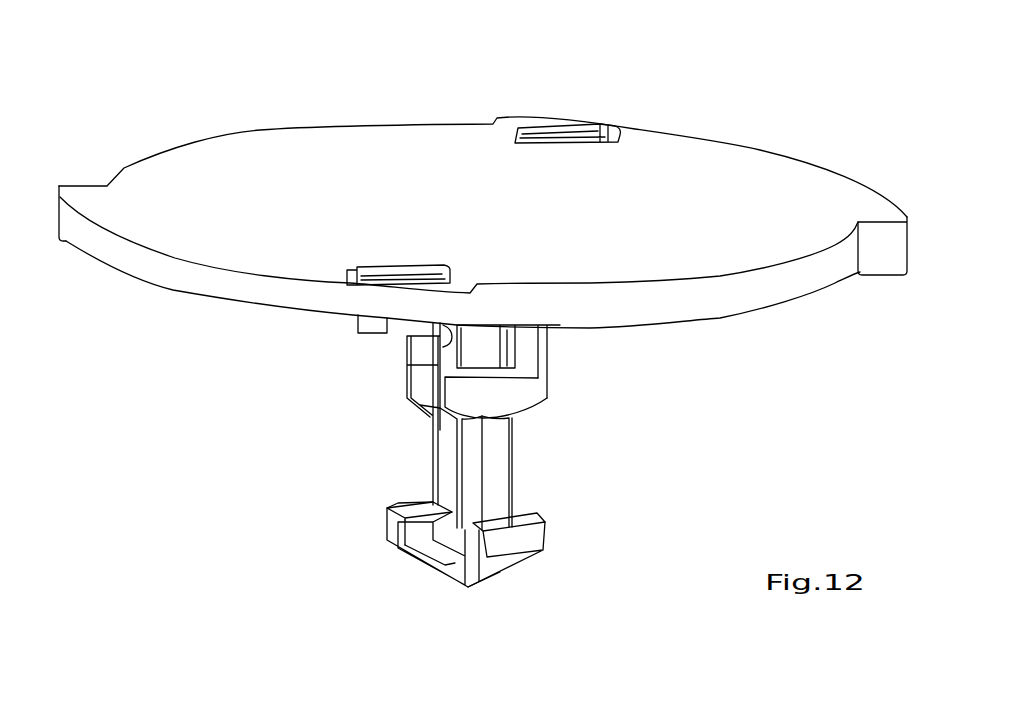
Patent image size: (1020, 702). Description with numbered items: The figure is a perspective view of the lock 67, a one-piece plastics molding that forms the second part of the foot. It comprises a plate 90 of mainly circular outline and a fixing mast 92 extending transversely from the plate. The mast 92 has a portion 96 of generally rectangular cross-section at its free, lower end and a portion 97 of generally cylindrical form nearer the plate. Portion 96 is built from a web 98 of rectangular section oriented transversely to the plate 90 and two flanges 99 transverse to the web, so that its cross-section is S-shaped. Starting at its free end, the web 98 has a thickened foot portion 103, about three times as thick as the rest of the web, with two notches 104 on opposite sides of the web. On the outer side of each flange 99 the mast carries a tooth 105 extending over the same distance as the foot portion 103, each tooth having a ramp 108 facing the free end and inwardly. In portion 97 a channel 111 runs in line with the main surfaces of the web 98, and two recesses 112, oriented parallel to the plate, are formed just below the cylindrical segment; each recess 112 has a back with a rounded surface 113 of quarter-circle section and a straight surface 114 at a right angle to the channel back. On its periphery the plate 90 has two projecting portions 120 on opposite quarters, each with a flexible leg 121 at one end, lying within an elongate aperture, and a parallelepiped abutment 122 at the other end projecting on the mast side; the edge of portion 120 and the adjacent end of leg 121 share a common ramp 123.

The lock 67 is at (296, 86).
The plate 90 is at (200, 160).
The fixing mast 92 is at (323, 428).
The portion of generally rectangular cross-section 96 is at (501, 469).
The portion of generally cylindrical form 97 is at (558, 330).
The web 98 is at (447, 448).
The flanges 99 is at (470, 486).
The foot portion 103 is at (469, 576).
The notches 104 is at (440, 566).
The tooth 105 is at (398, 508).
The ramp 108 is at (510, 575).
The channel 111 is at (435, 383).
The recesses 112 is at (504, 366).
The rounded surface 113 is at (478, 338).
The straight surface 114 is at (505, 335).
The projecting portions 120 is at (733, 158).
The flexible leg 121 is at (597, 132).
The abutment 122 is at (885, 262).
The ramp 123 is at (448, 333).